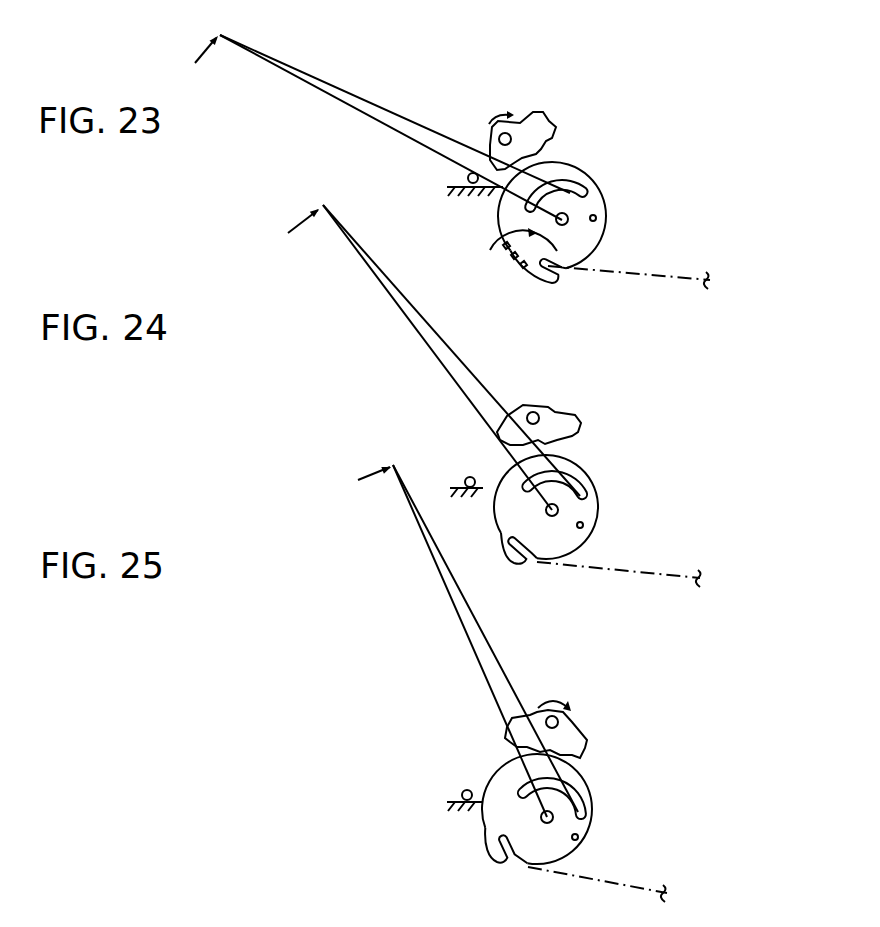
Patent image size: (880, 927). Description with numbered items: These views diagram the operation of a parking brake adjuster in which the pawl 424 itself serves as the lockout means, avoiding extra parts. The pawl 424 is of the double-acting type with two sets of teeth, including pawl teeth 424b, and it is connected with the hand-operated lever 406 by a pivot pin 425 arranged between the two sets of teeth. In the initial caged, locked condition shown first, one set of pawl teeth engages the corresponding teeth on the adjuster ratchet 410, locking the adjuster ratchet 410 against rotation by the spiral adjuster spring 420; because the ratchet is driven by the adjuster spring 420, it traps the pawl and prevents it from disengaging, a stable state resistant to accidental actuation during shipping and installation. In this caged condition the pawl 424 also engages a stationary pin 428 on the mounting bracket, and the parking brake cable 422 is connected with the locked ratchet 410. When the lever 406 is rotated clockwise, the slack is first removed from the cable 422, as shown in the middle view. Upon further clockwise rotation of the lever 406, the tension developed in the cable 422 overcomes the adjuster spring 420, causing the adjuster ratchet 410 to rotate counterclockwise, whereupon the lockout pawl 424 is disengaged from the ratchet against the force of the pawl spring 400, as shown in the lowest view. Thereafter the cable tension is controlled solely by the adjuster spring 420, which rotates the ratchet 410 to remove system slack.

In FIG. 23, the pawl spring 400 is at (489, 124).
In FIG. 25, the pawl spring 400 is at (552, 698).
In FIG. 23, the hand-operated lever 406 is at (303, 79).
In FIG. 24, the hand-operated lever 406 is at (380, 287).
In FIG. 25, the hand-operated lever 406 is at (447, 592).
In FIG. 23, the adjuster ratchet 410 is at (602, 228).
In FIG. 24, the adjuster ratchet 410 is at (594, 512).
In FIG. 25, the adjuster ratchet 410 is at (590, 831).
In FIG. 23, the spiral adjuster spring 420 is at (500, 254).
In FIG. 23, the parking brake cable 422 is at (613, 277).
In FIG. 24, the parking brake cable 422 is at (618, 577).
In FIG. 25, the parking brake cable 422 is at (640, 882).
In FIG. 23, the pawl 424 is at (557, 128).
In FIG. 24, the pawl 424 is at (575, 416).
In FIG. 25, the pawl 424 is at (590, 752).
In FIG. 23, the pawl teeth 424b is at (526, 158).
In FIG. 23, the pivot pin 425 is at (512, 132).
In FIG. 24, the pivot pin 425 is at (538, 412).
In FIG. 25, the pivot pin 425 is at (562, 727).
In FIG. 23, the stationary pin 428 is at (468, 178).
In FIG. 24, the stationary pin 428 is at (466, 477).
In FIG. 25, the stationary pin 428 is at (466, 790).